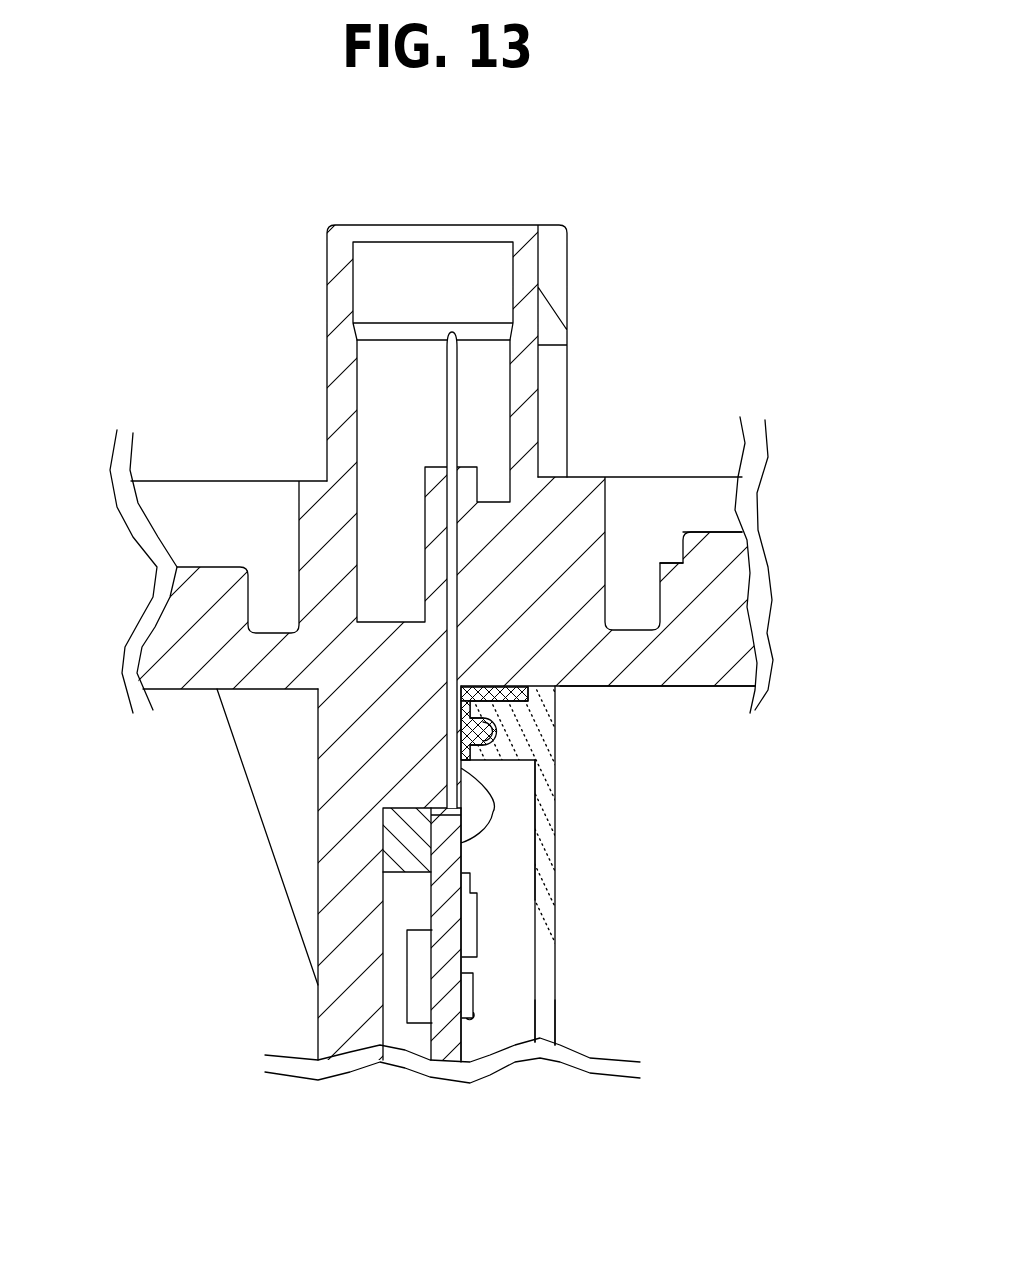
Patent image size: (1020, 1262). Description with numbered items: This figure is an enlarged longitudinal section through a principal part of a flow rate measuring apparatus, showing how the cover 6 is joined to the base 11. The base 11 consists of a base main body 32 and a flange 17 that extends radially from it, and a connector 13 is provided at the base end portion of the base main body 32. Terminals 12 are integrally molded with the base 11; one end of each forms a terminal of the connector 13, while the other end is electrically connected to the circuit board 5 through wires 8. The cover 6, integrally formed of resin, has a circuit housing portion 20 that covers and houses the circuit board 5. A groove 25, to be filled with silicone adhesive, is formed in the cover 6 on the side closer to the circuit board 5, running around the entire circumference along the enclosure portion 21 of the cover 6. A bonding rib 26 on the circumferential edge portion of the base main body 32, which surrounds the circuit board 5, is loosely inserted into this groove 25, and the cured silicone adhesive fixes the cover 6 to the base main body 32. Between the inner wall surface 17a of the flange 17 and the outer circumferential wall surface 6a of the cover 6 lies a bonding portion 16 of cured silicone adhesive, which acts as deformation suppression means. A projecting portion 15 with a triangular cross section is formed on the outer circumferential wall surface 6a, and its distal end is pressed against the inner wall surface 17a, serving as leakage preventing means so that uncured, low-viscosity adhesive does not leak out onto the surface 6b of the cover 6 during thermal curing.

The circuit board 5 is at (443, 997).
The cover 6 is at (555, 918).
The outer circumferential wall surface of the cover 6a is at (497, 700).
The surface of the cover 6b is at (560, 1027).
The wires 8 is at (493, 812).
The base 11 is at (345, 915).
The terminals 12 is at (603, 510).
The connector 13 is at (335, 305).
The projecting portion 15 is at (540, 690).
The bonding portion 16 is at (490, 685).
The flange 17 is at (725, 590).
The inner wall surface of the flange 17a is at (600, 690).
The circuit housing portion 20 is at (507, 988).
The enclosure portion 21 is at (495, 730).
The groove 25 is at (537, 747).
The bonding rib 26 is at (467, 732).
The base main body 32 is at (333, 982).